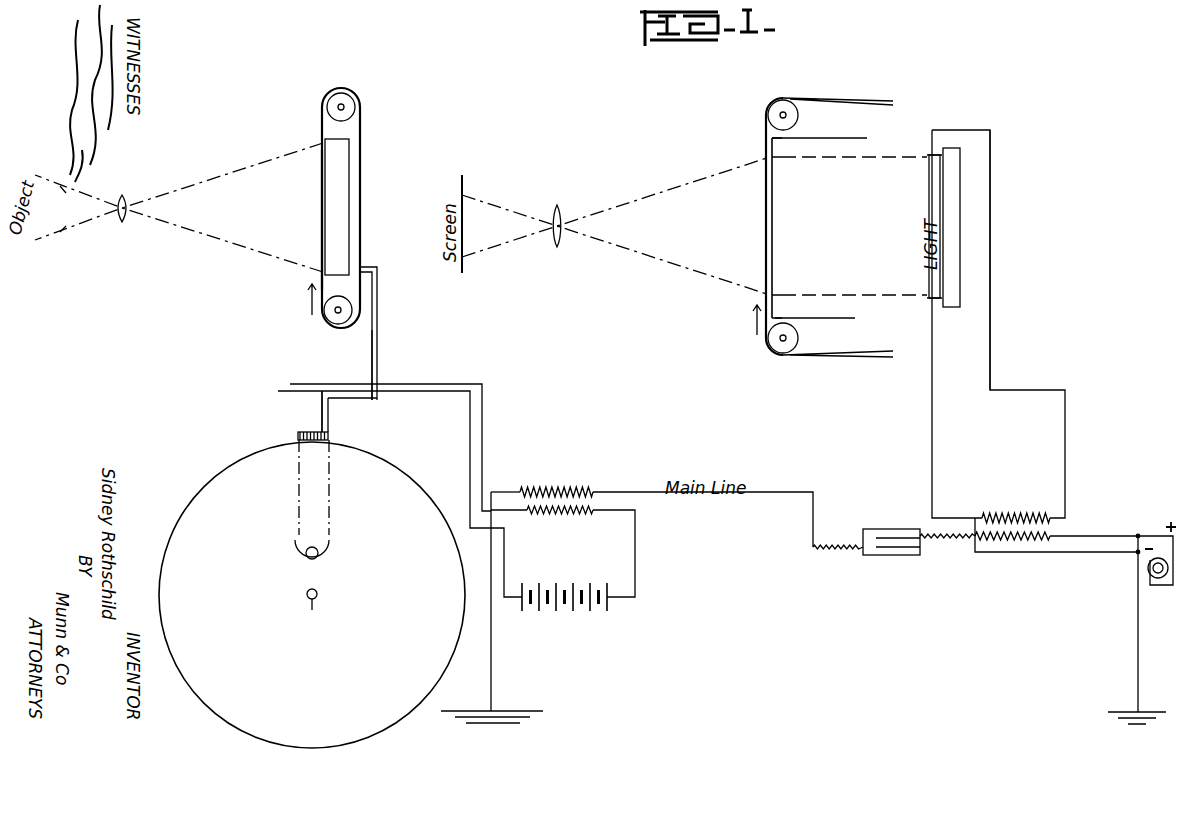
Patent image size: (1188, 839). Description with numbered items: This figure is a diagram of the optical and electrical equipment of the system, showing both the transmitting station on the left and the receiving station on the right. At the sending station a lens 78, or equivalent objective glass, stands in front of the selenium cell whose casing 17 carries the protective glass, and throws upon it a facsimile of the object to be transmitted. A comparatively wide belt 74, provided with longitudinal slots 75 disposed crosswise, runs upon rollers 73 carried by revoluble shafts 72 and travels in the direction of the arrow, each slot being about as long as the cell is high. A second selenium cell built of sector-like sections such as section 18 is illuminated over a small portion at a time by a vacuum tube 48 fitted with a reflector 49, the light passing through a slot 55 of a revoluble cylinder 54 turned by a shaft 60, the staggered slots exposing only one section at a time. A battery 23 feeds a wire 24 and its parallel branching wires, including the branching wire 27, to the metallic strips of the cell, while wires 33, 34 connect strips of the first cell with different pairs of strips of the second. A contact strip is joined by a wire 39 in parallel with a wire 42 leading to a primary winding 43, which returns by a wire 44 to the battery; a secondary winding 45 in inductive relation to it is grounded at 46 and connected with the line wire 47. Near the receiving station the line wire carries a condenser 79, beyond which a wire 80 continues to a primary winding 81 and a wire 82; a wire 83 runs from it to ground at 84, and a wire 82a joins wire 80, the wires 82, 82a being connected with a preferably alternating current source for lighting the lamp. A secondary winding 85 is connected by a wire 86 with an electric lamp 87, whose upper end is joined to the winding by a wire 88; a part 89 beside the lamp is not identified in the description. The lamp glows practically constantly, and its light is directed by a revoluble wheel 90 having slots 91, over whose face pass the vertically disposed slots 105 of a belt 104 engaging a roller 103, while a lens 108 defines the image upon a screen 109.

The casing 17 is at (340, 149).
The section of selenium cell 18 is at (298, 437).
The battery 23 is at (568, 606).
The wire 24 is at (278, 391).
The branching wire 27 is at (322, 411).
The wire 33 is at (372, 332).
The wire 34 is at (377, 297).
The wire 39 is at (328, 419).
The wire 42 is at (290, 391).
The primary winding 43 is at (576, 513).
The wire 44 is at (635, 549).
The secondary winding 45 is at (558, 492).
The ground 46 is at (491, 711).
The line wire 47 is at (748, 492).
The vacuum tube 48 is at (318, 560).
The reflector 49 is at (297, 562).
The revoluble cylinder 54 is at (232, 518).
The slot 55 is at (222, 488).
The shaft 60 is at (314, 611).
The revoluble shaft 72 is at (344, 104).
The roller 73 is at (352, 112).
The belt 74 is at (322, 166).
The longitudinal slot 75 is at (322, 223).
The lens 78 is at (124, 200).
The condenser 79 is at (872, 560).
The wire 80 is at (945, 543).
The primary winding 81 is at (1018, 548).
The wire 82 is at (1095, 536).
The wire 82a is at (1062, 553).
The wire 83 is at (1136, 599).
The ground 84 is at (1138, 712).
The secondary winding 85 is at (1018, 513).
The wire 86 is at (932, 452).
The electric lamp 87 is at (929, 194).
The wire 88 is at (991, 224).
The reflector 89 is at (948, 220).
The revoluble wheel 90 is at (775, 306).
The slots 91 is at (776, 263).
The roller 103 is at (787, 116).
The belt 104 is at (878, 90).
The vertically-disposed slots 105 is at (766, 251).
The lens 108 is at (560, 245).
The screen 109 is at (462, 267).